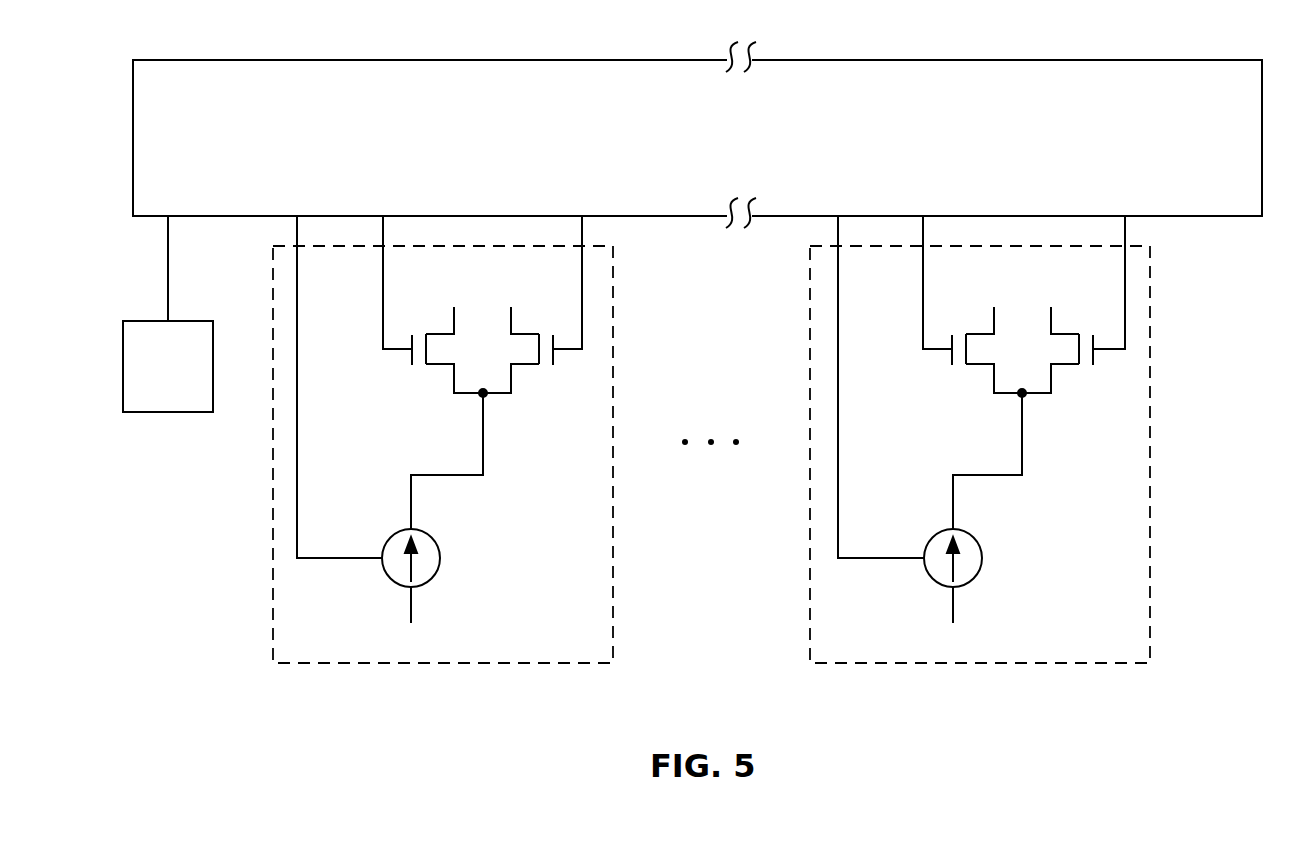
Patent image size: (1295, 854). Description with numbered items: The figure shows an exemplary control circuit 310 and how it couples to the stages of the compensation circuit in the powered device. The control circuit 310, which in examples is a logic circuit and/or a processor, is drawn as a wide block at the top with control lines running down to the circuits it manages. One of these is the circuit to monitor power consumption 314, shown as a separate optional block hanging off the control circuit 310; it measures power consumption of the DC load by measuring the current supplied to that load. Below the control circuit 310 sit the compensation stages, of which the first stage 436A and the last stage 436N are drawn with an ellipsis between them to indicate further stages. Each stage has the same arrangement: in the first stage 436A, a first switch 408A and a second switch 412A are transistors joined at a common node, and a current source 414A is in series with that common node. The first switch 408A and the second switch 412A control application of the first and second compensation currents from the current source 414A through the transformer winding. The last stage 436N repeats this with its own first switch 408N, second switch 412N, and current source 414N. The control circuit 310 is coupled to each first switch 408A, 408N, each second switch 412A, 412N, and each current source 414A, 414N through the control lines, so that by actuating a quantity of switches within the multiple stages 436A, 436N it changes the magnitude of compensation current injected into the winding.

The control circuit 310 is at (697, 135).
The circuit to monitor power consumption 314 is at (168, 314).
The first switch 408A is at (413, 329).
The second switch 412A is at (535, 329).
The current source 414A is at (440, 556).
The stage 436A is at (273, 518).
The first switch 408N is at (953, 329).
The second switch 412N is at (1075, 329).
The current source 414N is at (982, 554).
The stage 436N is at (810, 506).